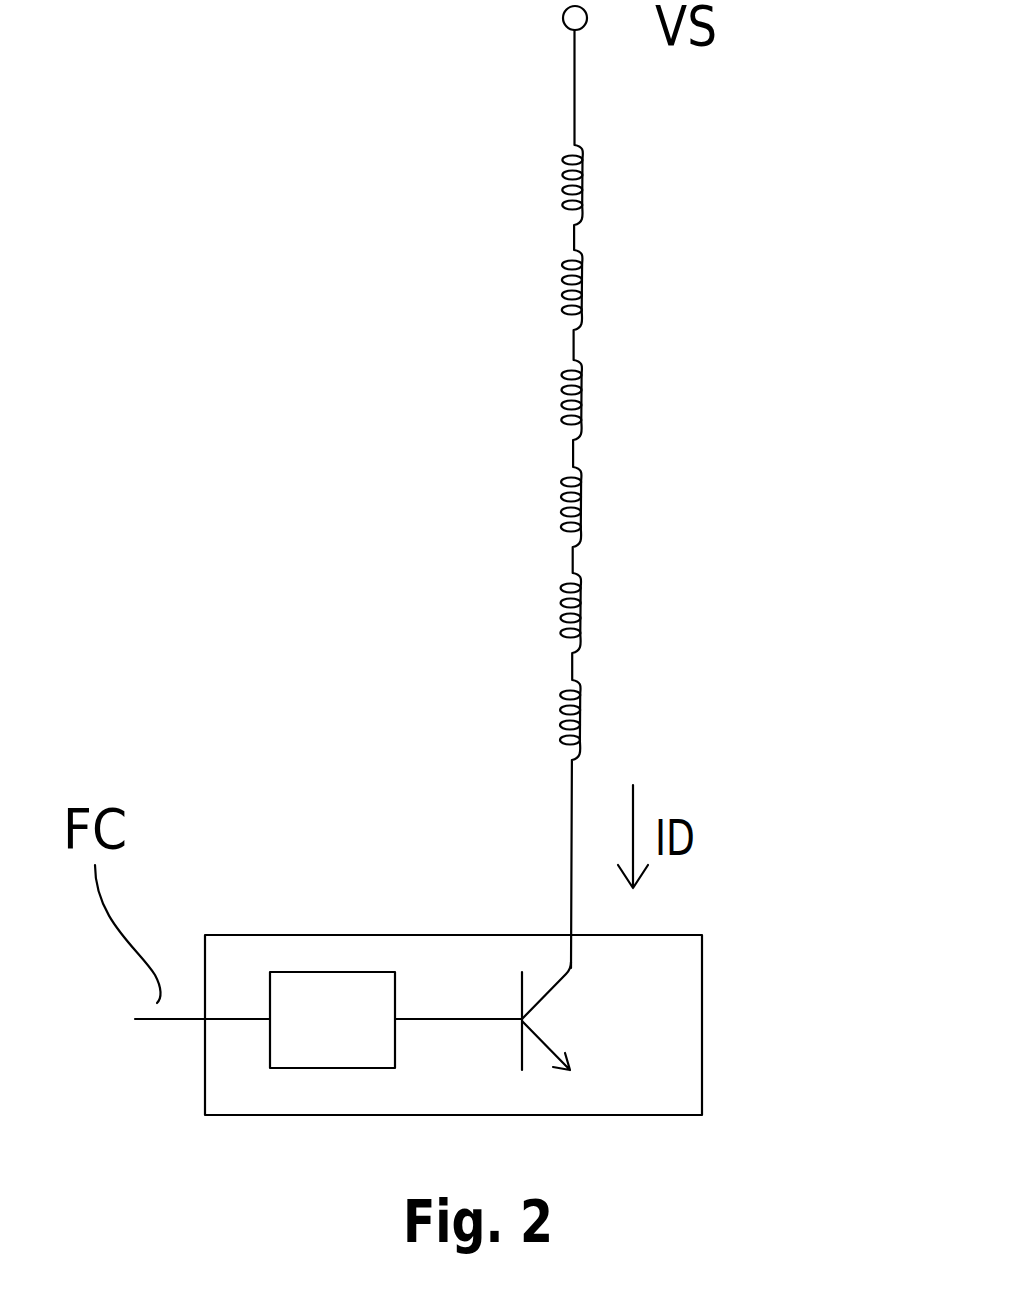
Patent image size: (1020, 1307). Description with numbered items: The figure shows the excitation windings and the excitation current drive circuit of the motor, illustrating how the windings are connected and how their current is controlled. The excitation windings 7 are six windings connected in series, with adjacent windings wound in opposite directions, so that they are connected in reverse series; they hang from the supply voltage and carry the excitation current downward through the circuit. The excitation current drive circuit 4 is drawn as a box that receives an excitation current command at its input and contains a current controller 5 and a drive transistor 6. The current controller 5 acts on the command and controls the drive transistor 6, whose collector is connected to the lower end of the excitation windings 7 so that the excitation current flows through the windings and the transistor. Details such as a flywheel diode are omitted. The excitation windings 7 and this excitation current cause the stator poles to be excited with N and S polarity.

The excitation current drive circuit 4 is at (235, 935).
The current controller 5 is at (335, 1003).
The drive transistor 6 is at (517, 958).
The excitation windings 7 is at (548, 400).